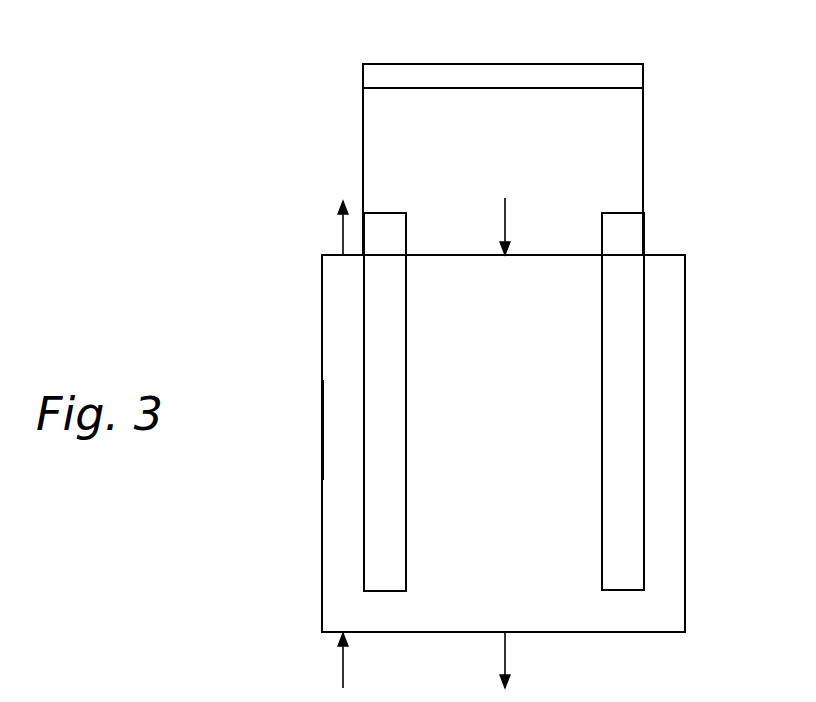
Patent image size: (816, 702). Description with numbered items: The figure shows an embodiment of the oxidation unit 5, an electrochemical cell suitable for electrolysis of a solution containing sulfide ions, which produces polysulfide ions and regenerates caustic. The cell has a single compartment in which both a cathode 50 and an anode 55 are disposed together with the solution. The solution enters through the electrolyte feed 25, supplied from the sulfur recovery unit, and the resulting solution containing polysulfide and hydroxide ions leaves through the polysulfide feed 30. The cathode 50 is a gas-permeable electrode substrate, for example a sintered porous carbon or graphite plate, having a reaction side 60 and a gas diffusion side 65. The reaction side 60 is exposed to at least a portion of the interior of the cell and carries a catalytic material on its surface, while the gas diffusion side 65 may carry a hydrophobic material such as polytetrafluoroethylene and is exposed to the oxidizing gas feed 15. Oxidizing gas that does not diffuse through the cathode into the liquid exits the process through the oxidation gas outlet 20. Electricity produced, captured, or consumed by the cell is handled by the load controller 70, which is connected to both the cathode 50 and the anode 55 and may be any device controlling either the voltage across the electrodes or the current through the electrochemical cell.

The oxidation unit 5 is at (687, 424).
The oxidizing gas feed 15 is at (340, 670).
The oxidation gas outlet 20 is at (340, 230).
The electrolyte feed 25 is at (508, 218).
The polysulfide feed 30 is at (508, 655).
The cathode 50 is at (400, 425).
The anode 55 is at (608, 423).
The reaction side 60 is at (407, 528).
The gas diffusion side 65 is at (364, 433).
The load controller 70 is at (507, 64).